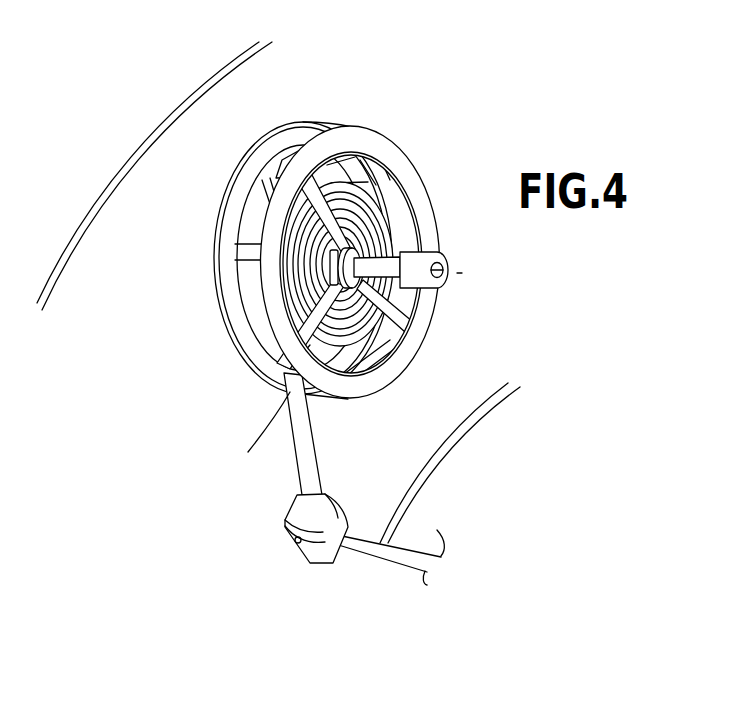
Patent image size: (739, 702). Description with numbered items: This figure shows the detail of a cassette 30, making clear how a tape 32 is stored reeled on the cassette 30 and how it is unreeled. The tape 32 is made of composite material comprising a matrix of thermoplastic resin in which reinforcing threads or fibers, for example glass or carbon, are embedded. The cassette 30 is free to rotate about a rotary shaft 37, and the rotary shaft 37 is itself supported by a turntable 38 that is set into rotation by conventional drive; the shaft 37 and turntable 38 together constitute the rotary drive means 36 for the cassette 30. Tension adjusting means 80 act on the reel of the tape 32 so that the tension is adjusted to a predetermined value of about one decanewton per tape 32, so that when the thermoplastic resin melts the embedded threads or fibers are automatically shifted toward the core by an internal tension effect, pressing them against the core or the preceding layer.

The cassette 30 is at (351, 251).
The tape 32 is at (308, 453).
The rotary drive means 36 is at (152, 103).
The rotary shaft 37 is at (380, 262).
The turntable 38 is at (150, 177).
The tension adjusting means 80 is at (302, 512).